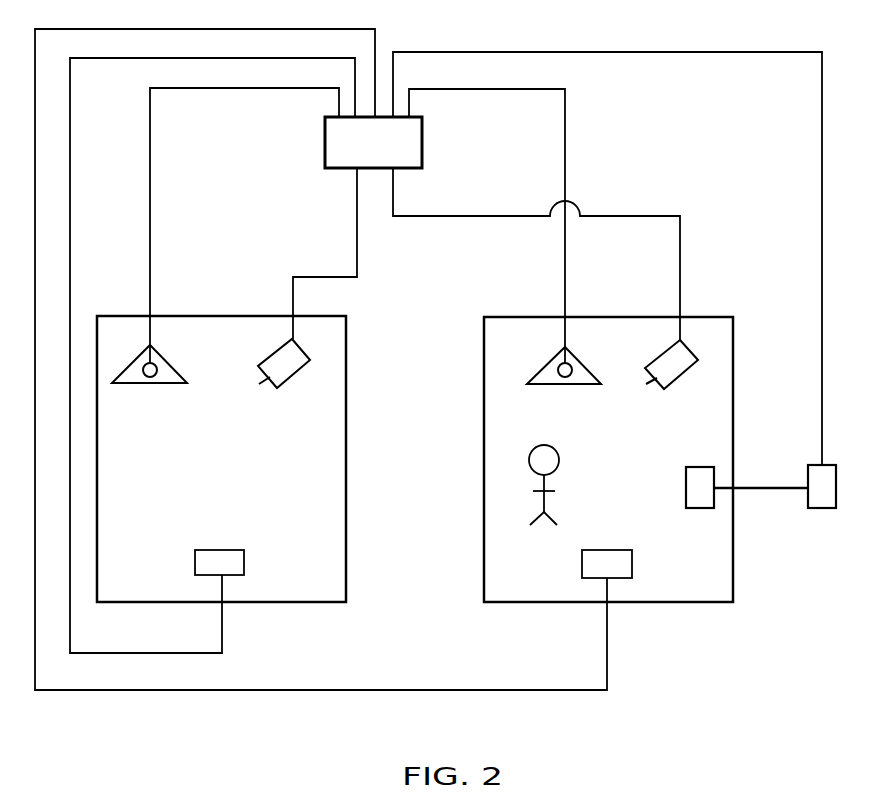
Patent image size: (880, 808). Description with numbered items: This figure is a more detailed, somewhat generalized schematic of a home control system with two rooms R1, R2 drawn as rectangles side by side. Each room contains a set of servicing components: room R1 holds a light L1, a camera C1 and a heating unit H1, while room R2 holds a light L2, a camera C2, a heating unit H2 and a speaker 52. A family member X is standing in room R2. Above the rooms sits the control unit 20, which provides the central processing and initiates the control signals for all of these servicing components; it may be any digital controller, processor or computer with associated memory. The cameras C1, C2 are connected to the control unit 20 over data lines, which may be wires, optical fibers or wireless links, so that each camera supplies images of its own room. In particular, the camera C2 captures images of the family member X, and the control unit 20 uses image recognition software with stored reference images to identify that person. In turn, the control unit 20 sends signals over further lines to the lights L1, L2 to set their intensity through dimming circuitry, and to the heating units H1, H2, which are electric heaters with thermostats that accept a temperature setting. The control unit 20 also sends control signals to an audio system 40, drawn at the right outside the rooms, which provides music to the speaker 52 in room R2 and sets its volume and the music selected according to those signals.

The control unit 20 is at (386, 156).
The room R1 is at (237, 314).
The room R2 is at (504, 315).
The light L1 is at (175, 386).
The light L2 is at (588, 387).
The camera C1 is at (290, 388).
The camera C2 is at (677, 386).
The heating unit H1 is at (195, 565).
The heating unit H2 is at (582, 566).
The family member X is at (546, 479).
The speaker 52 is at (686, 492).
The audio system 40 is at (818, 510).